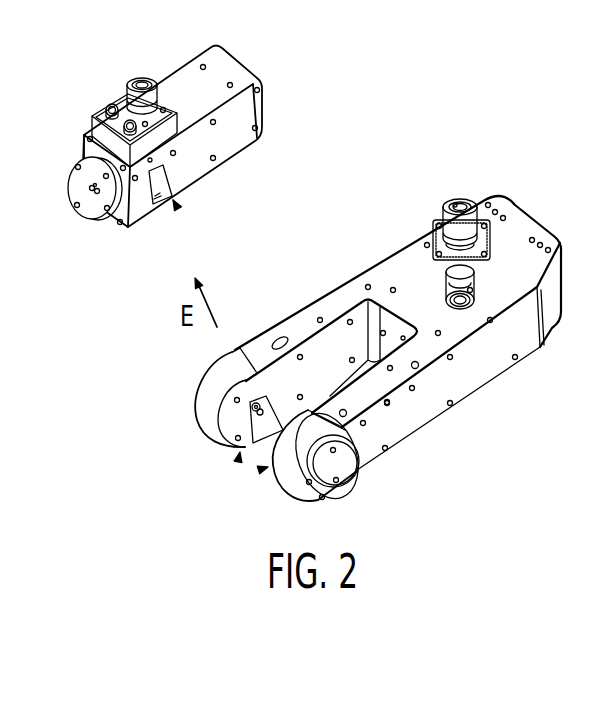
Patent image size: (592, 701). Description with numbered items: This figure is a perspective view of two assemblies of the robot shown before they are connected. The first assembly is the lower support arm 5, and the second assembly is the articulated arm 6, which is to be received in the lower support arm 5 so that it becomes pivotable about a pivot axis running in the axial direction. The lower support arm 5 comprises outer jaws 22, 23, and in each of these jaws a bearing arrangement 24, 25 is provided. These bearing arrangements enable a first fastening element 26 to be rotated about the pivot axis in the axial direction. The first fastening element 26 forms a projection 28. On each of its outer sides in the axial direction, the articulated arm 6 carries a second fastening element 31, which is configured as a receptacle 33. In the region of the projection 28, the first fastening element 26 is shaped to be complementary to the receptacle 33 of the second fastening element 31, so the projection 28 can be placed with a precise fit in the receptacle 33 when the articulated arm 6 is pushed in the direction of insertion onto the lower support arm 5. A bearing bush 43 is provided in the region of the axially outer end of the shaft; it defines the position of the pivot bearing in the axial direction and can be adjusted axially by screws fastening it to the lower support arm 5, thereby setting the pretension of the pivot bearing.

The lower support arm 5 is at (475, 378).
The articulated arm 6 is at (227, 147).
The outer jaw 22 is at (257, 360).
The outer jaw 23 is at (403, 430).
The bearing arrangement 24 is at (238, 460).
The bearing arrangement 25 is at (259, 470).
The first fastening element 26 is at (240, 430).
The projection 28 is at (267, 420).
The second fastening element 31 is at (178, 208).
The receptacle 33 is at (162, 205).
The bearing bush 43 is at (342, 465).